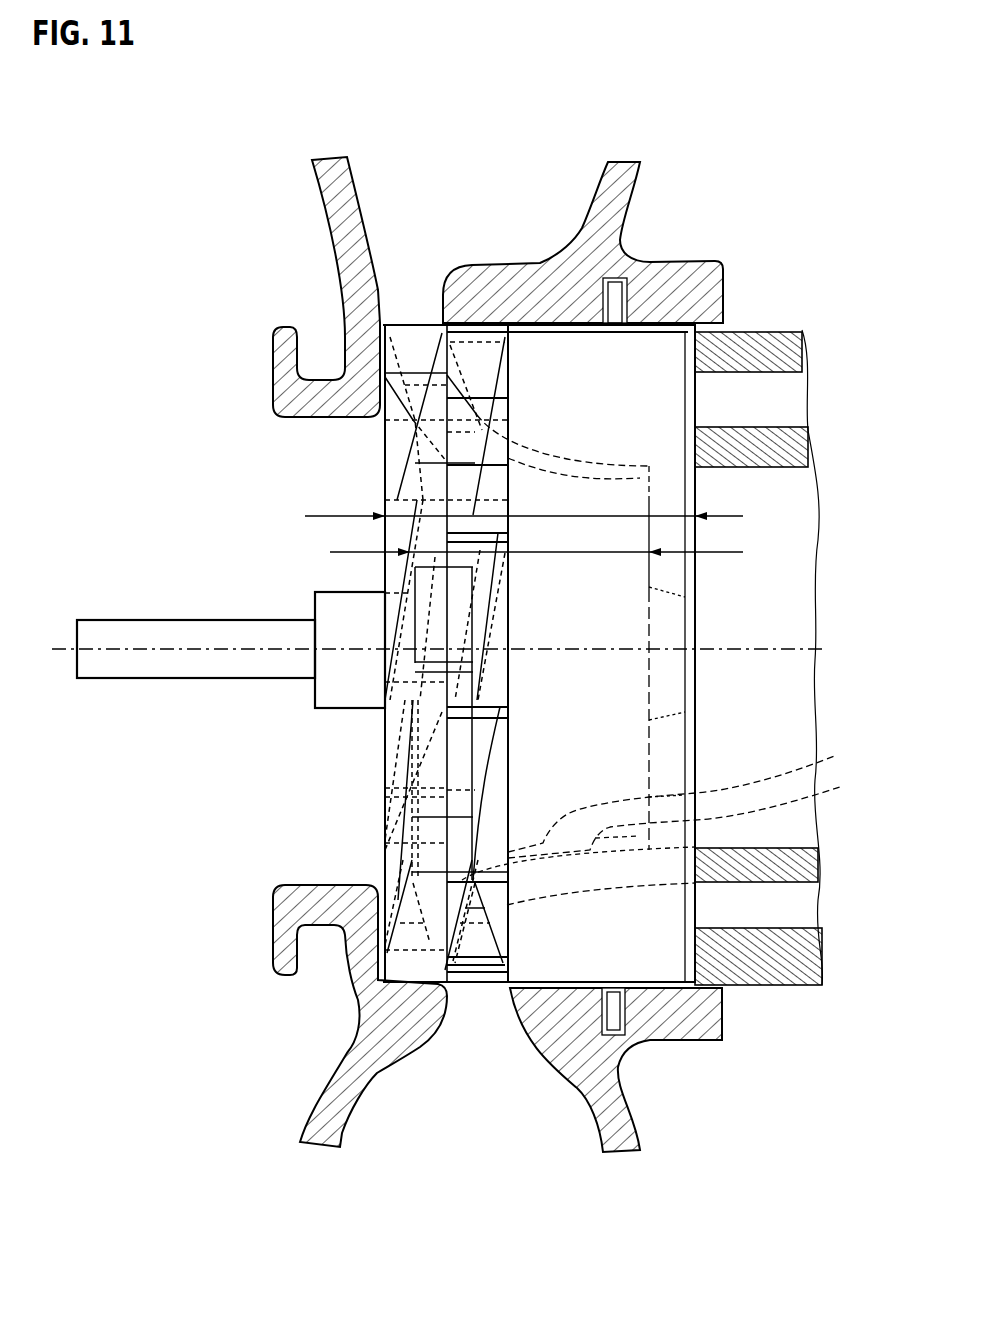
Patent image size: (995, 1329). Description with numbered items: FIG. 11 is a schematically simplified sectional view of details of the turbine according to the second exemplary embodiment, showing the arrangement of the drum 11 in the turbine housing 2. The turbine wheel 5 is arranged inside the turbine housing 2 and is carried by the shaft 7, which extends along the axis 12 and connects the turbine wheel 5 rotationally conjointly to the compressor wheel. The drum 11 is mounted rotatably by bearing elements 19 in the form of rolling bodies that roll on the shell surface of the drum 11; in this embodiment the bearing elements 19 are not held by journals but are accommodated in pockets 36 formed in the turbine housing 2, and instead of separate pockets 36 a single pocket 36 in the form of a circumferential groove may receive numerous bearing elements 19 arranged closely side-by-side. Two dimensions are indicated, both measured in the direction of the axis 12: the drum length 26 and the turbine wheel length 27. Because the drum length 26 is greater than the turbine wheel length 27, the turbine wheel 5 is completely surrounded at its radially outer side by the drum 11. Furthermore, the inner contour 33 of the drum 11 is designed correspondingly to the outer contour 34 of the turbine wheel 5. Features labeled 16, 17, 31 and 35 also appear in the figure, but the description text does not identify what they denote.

The turbine housing 2 is at (350, 207).
The turbine wheel 5 is at (648, 500).
The shaft 7 is at (92, 672).
The drum 11 is at (687, 403).
The axis 12 is at (795, 653).
The impeller 16 is at (412, 258).
The flow direction 17 is at (465, 1050).
The bearing elements 19 is at (623, 275).
The drum length 26 is at (723, 513).
The turbine wheel length 27 is at (717, 555).
The outlet channel 31 is at (610, 910).
The inner contour 33 is at (684, 817).
The outer contour 34 is at (661, 821).
The stator 35 is at (762, 910).
The pockets 36 is at (617, 297).